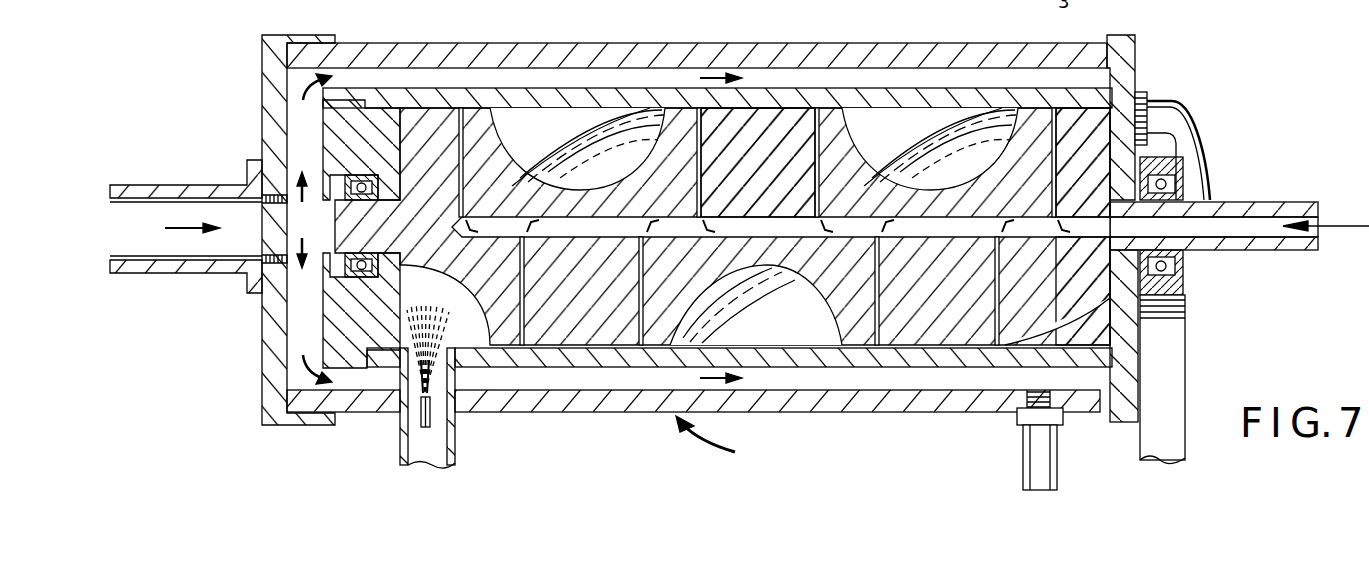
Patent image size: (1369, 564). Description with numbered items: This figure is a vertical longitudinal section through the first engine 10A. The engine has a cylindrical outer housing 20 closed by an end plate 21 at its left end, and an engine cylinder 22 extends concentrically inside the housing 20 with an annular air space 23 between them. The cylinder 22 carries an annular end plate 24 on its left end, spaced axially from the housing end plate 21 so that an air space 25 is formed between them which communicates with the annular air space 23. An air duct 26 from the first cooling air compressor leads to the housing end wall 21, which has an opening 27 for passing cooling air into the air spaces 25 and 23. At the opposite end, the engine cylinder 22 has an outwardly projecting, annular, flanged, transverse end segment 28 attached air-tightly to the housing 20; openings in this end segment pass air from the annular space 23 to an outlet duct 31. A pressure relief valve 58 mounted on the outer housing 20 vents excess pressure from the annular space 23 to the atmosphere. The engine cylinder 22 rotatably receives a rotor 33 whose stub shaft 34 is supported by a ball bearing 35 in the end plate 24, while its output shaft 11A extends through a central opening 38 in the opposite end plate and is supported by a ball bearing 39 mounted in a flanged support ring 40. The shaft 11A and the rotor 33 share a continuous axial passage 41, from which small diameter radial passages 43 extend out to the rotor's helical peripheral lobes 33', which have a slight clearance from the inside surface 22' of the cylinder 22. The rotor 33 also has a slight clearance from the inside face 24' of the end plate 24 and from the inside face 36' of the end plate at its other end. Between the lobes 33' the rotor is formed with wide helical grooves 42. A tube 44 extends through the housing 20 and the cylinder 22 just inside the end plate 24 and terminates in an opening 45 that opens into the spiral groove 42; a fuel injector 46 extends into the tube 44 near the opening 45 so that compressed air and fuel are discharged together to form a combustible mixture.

The engine 10A is at (548, 0).
The output shaft 11A is at (1278, 202).
The outer housing 20 is at (585, 43).
The end plate 21 is at (262, 350).
The engine cylinder 22 is at (717, 183).
The inside surface 22' is at (944, 145).
The annular air space 23 is at (800, 88).
The end plate 24 is at (361, 310).
The inside face 24' is at (382, 150).
The air space 25 is at (296, 128).
The air duct 26 is at (176, 275).
The opening 27 is at (272, 228).
The end segment 28 is at (1136, 52).
The outlet duct 31 is at (1182, 122).
The rotor 33 is at (930, 149).
The peripheral lobes 33' is at (758, 110).
The stub shaft 34 is at (343, 262).
The ball bearing 35 is at (352, 175).
The inside face 36' is at (1058, 226).
The central opening 38 is at (1183, 172).
The ball bearing 39 is at (1183, 272).
The flanged support ring 40 is at (1185, 312).
The axial passage 41 is at (1228, 240).
The helical groove 42 is at (497, 128).
The radial passages 43 is at (463, 163).
The tube 44 is at (404, 448).
The opening 45 is at (443, 348).
The fuel injector 46 is at (432, 420).
The pressure relief valve 58 is at (1025, 447).